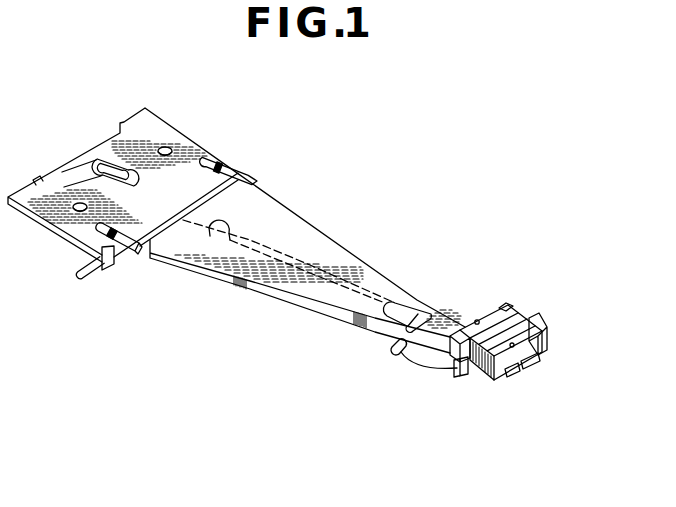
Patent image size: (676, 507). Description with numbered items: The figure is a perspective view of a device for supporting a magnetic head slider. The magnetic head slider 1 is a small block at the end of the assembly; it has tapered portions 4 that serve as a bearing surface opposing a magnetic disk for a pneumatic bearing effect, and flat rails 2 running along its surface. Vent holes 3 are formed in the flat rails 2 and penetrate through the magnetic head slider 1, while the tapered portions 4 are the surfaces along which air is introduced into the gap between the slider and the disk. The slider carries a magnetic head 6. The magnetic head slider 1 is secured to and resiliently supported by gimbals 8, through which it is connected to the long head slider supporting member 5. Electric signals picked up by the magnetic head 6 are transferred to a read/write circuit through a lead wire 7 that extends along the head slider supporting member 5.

The magnetic head slider 1 is at (524, 339).
The flat rails 2 is at (487, 307).
The vent holes 3 is at (477, 319).
The tapered portions 4 is at (504, 309).
The head slider supporting member 5 is at (345, 265).
The magnetic head 6 is at (472, 378).
The lead wire 7 is at (413, 360).
The gimbals 8 is at (437, 313).